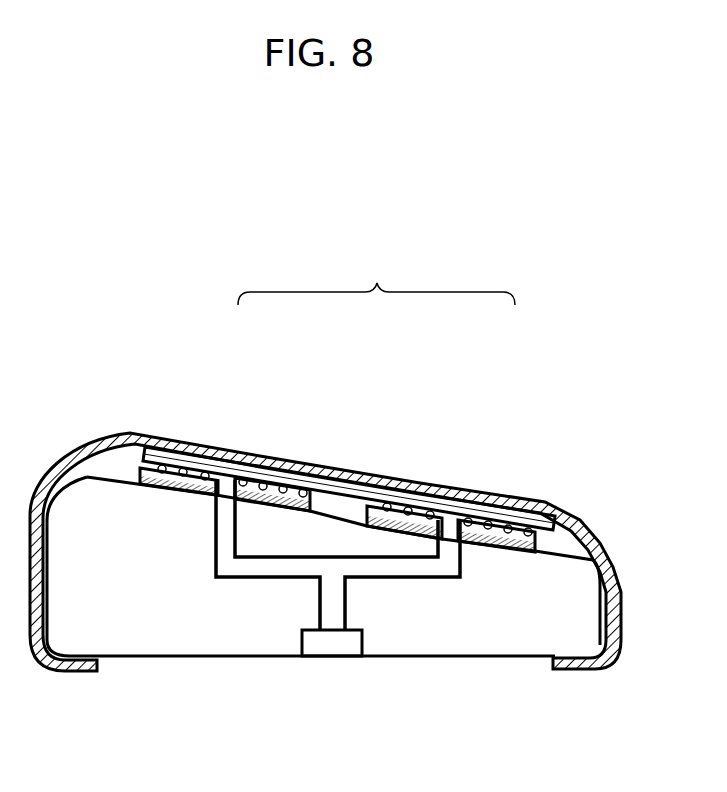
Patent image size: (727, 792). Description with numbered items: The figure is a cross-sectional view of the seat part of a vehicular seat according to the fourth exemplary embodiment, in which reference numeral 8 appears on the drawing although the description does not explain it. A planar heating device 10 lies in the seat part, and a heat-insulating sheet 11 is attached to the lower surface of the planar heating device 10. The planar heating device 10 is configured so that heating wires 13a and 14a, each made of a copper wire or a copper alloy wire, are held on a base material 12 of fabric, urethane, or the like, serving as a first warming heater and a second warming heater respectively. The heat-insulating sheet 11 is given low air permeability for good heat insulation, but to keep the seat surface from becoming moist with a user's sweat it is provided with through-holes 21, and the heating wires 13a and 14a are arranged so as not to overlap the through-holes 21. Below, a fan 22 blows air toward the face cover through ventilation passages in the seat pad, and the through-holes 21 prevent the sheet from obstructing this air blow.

The housing 8 is at (108, 448).
The planar heating device 10 is at (376, 277).
The heat-insulating sheet 11 is at (463, 541).
The base material 12 is at (251, 463).
The heating wire 13a is at (277, 470).
The heating wire 14a is at (427, 507).
The through-hole 21 is at (230, 493).
The fan 22 is at (333, 645).